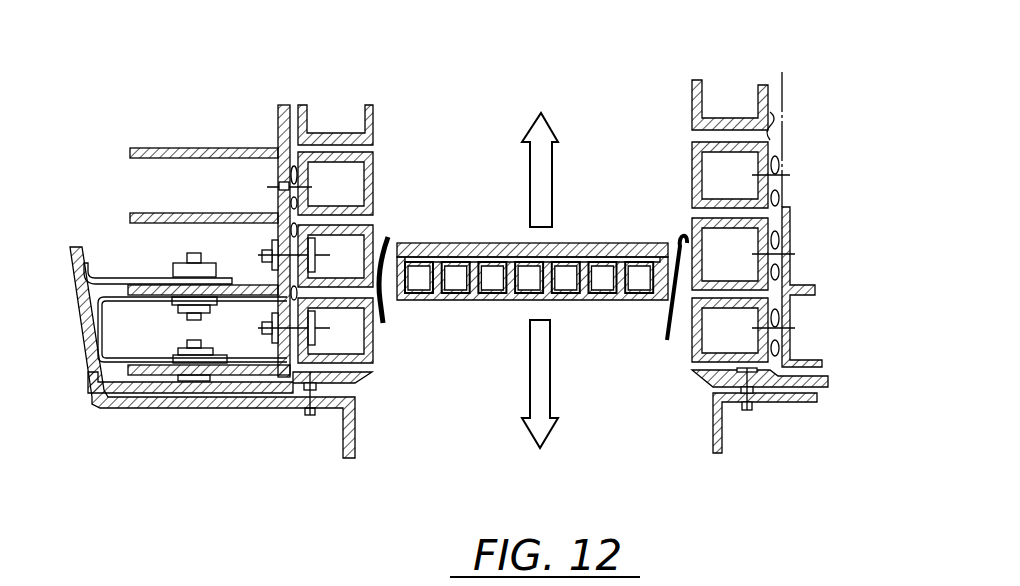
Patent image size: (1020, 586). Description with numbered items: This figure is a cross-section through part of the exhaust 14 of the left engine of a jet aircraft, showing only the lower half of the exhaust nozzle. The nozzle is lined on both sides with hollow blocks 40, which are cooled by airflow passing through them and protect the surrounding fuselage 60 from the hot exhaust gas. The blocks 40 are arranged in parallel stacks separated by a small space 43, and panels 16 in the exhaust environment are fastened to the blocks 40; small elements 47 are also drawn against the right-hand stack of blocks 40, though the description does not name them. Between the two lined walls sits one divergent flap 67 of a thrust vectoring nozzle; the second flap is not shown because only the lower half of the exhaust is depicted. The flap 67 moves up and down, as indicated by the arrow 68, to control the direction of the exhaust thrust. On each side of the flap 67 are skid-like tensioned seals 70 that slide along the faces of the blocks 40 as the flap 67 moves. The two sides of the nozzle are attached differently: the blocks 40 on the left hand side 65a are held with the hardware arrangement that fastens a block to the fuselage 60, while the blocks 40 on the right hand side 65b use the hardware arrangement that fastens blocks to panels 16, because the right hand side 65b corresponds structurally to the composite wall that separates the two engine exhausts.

The exhaust 14 is at (435, 422).
The panels 16 is at (792, 348).
The blocks 40 is at (374, 185).
The space 43 is at (374, 147).
The resilient clips 47 is at (775, 115).
The fuselage 60 is at (133, 322).
The left hand side 65a is at (338, 105).
The right hand side 65b is at (678, 97).
The divergent flap 67 is at (523, 303).
The arrow 68 is at (547, 190).
The tensioned seals 70 is at (385, 323).